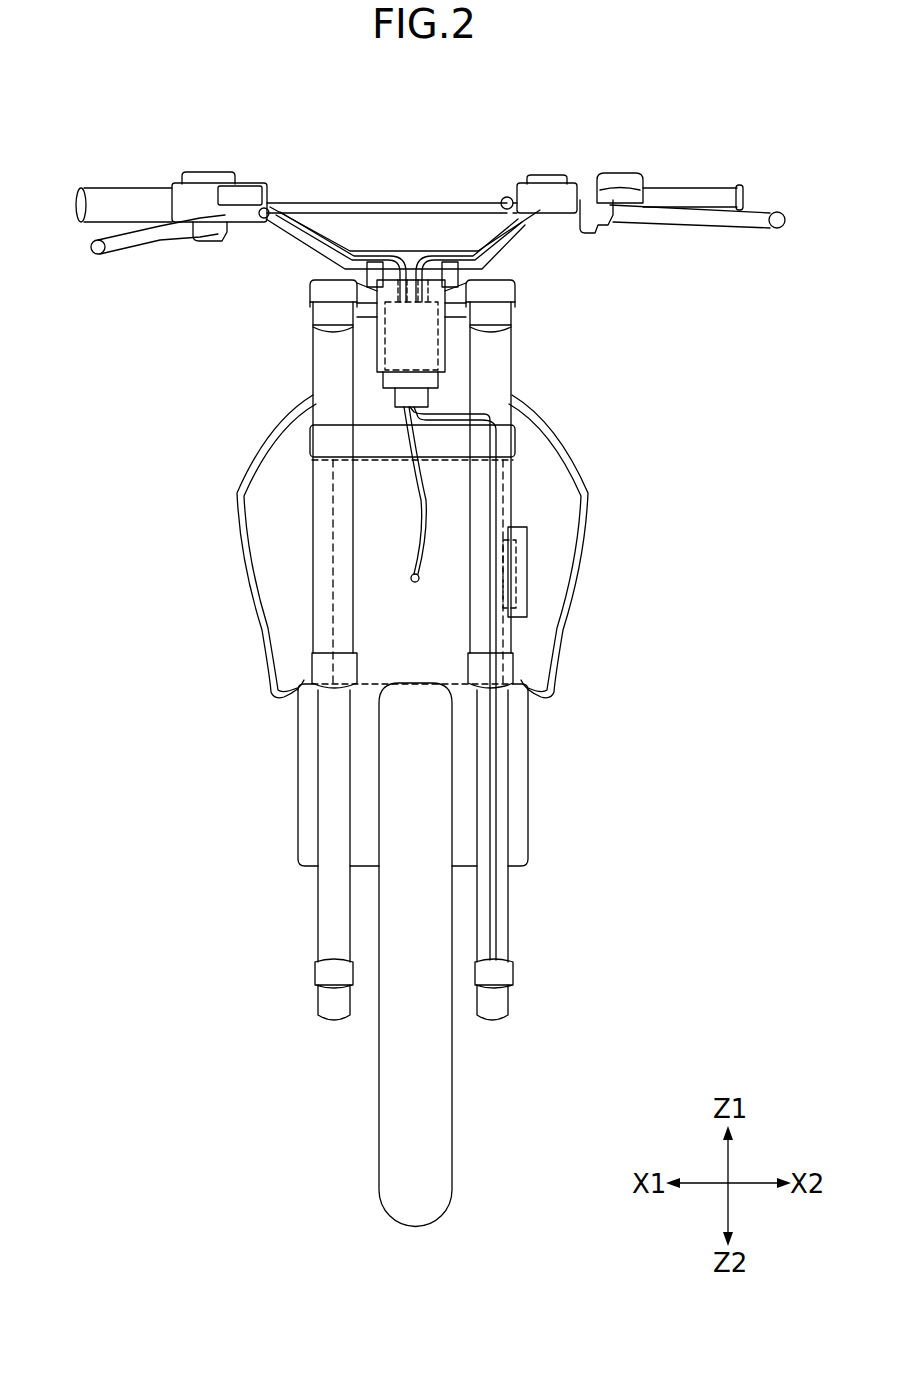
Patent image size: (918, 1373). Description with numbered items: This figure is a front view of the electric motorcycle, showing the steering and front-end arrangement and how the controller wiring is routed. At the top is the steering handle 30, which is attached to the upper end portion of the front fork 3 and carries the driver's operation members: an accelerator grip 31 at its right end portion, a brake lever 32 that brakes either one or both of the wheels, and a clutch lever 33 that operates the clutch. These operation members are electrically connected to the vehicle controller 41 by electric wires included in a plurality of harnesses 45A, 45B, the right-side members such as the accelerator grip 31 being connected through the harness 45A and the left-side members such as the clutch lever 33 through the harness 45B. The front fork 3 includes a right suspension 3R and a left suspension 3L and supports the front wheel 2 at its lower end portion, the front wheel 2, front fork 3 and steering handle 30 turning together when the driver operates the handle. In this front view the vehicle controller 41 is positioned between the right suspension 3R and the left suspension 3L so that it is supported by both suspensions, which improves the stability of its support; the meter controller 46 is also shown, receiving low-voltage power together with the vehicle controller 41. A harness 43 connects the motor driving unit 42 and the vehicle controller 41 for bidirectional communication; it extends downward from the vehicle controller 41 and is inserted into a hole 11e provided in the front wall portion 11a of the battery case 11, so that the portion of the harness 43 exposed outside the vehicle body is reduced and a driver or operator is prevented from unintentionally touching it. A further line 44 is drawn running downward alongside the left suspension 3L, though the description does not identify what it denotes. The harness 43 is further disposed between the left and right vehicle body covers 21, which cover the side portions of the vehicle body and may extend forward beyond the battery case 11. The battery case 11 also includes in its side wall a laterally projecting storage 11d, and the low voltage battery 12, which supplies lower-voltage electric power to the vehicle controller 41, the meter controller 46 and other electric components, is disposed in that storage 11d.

The front wheel 2 is at (445, 1088).
The front fork 3 is at (513, 894).
The left suspension 3L is at (505, 637).
The right suspension 3R is at (333, 783).
The battery case 11 is at (330, 580).
The front wall portion 11a is at (377, 646).
The storage 11d is at (523, 550).
The hole 11e is at (410, 580).
The low voltage battery 12 is at (522, 581).
The vehicle body cover 21 is at (258, 462).
The steering handle 30 is at (383, 175).
The accelerator grip 31 is at (135, 197).
The brake lever 32 is at (133, 237).
The clutch lever 33 is at (705, 232).
The vehicle controller 41 is at (427, 382).
The motor driving unit 42 is at (530, 793).
The harness 43 is at (423, 508).
The cable 44 is at (493, 488).
The harness 45A is at (301, 239).
The harness 45B is at (527, 238).
The meter controller 46 is at (443, 342).